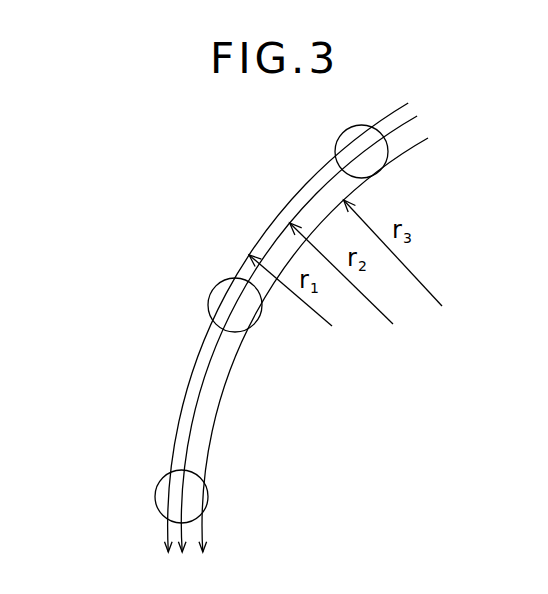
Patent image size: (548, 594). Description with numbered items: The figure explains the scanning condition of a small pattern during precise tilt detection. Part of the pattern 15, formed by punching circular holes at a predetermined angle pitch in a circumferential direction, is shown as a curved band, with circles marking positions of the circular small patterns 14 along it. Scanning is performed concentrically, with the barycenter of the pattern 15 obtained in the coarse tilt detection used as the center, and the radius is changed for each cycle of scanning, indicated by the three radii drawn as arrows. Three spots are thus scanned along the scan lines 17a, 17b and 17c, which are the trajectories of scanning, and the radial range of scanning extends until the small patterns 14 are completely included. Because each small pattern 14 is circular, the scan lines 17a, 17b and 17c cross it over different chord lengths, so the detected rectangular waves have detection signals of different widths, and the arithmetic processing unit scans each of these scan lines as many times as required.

The pattern 15 is at (187, 221).
The small pattern 14 is at (213, 292).
The scan line 17a is at (189, 382).
The scan line 17b is at (195, 412).
The scan line 17c is at (212, 435).